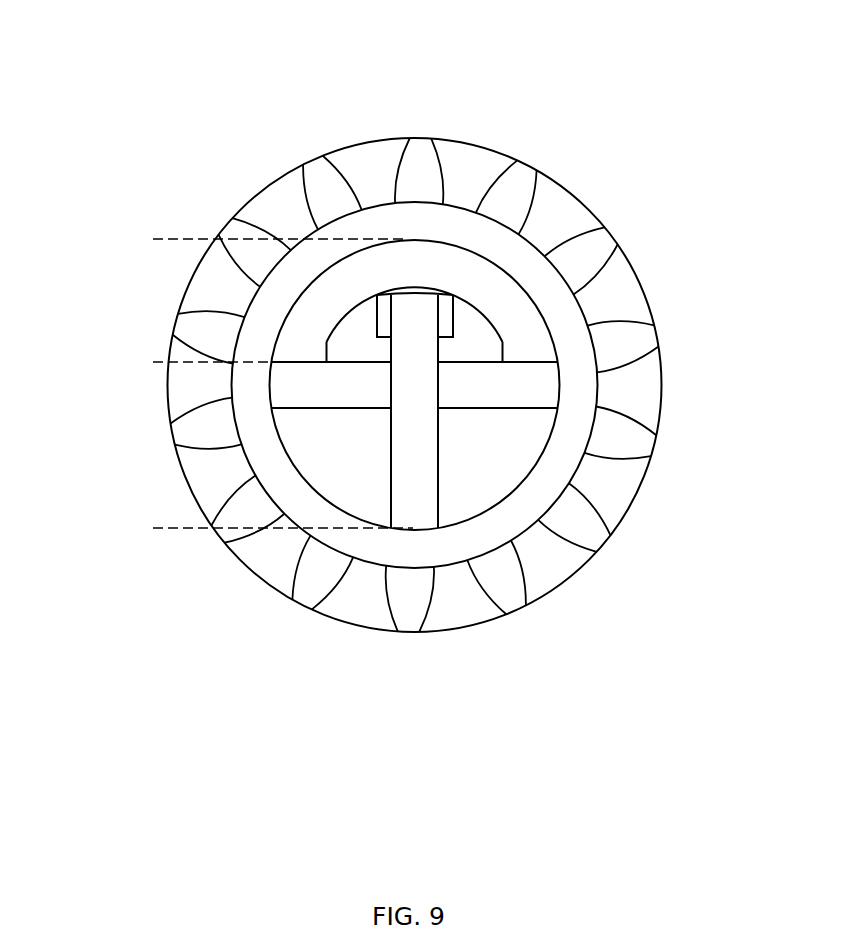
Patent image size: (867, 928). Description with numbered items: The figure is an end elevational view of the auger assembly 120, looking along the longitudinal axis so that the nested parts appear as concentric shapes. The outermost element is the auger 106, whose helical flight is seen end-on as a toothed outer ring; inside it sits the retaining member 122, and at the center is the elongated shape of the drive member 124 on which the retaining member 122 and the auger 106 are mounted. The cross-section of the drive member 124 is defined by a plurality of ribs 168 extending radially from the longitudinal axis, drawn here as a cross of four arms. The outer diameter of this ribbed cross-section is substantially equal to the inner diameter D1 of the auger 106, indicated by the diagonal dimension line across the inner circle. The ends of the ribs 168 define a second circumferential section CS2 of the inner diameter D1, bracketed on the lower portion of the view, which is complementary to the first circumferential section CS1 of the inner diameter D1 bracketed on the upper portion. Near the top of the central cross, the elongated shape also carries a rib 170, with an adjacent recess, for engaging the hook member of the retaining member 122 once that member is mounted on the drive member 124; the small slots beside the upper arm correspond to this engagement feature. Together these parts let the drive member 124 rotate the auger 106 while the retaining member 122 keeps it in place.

The auger assembly 120 is at (296, 78).
The drive member 124 is at (507, 207).
The retaining member 122 is at (510, 330).
The auger 106 is at (578, 368).
The ribs 168 is at (342, 385).
The rib 170 is at (410, 325).
The inner diameter of the auger D1 is at (482, 513).
The first circumferential section CS1 is at (153, 240).
The second circumferential section CS2 is at (150, 363).